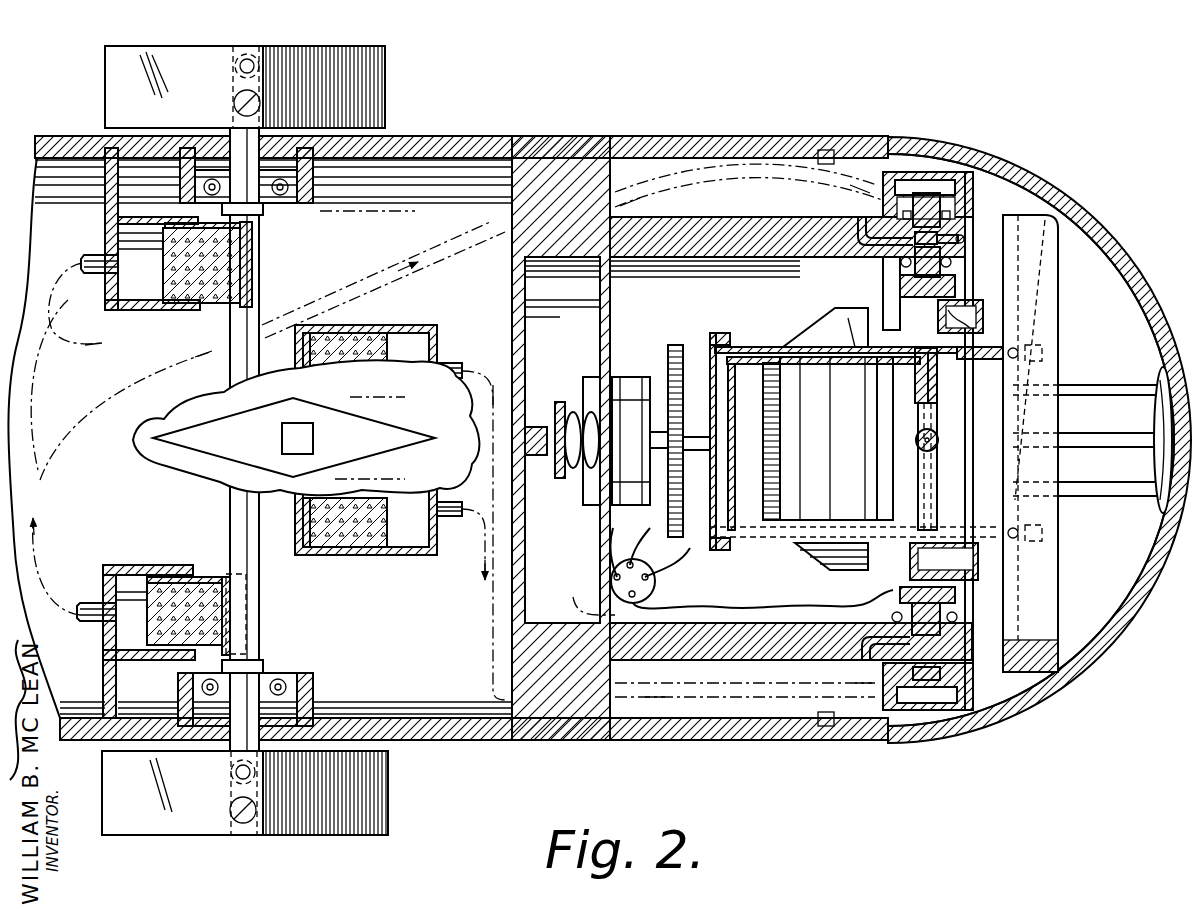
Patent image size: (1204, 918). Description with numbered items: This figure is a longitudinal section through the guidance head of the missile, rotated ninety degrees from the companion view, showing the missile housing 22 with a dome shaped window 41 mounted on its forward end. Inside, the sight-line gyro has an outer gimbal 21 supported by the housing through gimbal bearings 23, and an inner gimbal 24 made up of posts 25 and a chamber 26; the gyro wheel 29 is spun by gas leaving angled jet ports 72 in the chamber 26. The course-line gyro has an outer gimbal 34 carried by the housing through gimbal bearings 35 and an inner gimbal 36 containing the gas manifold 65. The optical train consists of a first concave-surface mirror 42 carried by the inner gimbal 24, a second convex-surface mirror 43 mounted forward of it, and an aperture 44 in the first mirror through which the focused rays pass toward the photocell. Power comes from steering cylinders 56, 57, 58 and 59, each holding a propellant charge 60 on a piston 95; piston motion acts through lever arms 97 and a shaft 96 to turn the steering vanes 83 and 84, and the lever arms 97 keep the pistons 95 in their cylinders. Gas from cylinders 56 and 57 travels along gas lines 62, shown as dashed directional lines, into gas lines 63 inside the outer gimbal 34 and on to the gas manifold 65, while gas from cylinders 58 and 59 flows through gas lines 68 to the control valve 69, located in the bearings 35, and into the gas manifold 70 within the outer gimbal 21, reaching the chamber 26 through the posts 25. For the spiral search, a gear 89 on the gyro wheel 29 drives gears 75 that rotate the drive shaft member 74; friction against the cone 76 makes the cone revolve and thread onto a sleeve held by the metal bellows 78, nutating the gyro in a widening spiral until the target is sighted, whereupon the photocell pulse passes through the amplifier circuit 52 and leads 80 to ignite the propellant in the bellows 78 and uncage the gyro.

The outer gimbal 21 is at (972, 177).
The missile housing 22 is at (665, 145).
The gimbal bearings 23 is at (947, 215).
The inner gimbal 24 is at (731, 323).
The posts 25 is at (747, 343).
The chamber 26 is at (723, 347).
The gyro wheel 29 is at (805, 566).
The outer gimbal 34 is at (900, 287).
The gimbal bearings 35 is at (957, 268).
The inner gimbal 36 is at (977, 314).
The dome shaped window 41 is at (1113, 232).
The first concave-surface mirror 42 is at (1030, 573).
The second convex-surface mirror 43 is at (1163, 503).
The aperture 44 is at (1013, 420).
The amplifier circuit 52 is at (579, 595).
The steering cylinder 56 is at (440, 362).
The steering cylinder 57 is at (420, 563).
The steering cylinder 58 is at (120, 567).
The steering cylinder 59 is at (107, 238).
The propellant charge 60 is at (162, 279).
The gas lines 62 is at (487, 626).
The gas lines 63 is at (947, 595).
The gas manifold 65 is at (958, 327).
The gas lines 68 is at (490, 248).
The control valve 69 is at (947, 242).
The gas manifold 70 is at (905, 185).
The jet ports 72 is at (728, 548).
The drive shaft member 74 is at (662, 417).
The gears 75 is at (676, 345).
The cone 76 is at (593, 392).
The metal bellows 78 is at (566, 403).
The leads 80 is at (751, 559).
The steering vanes 83 is at (240, 450).
The steering vanes 84 is at (368, 80).
The gear 89 is at (770, 386).
The piston 95 is at (205, 302).
The shaft 96 is at (313, 437).
The lever arms 97 is at (257, 281).